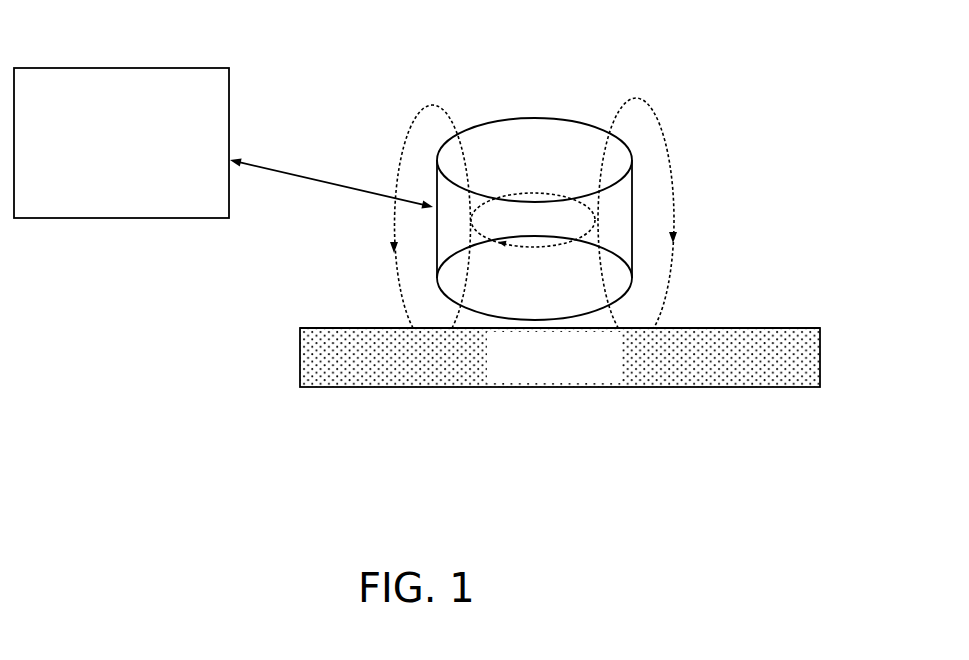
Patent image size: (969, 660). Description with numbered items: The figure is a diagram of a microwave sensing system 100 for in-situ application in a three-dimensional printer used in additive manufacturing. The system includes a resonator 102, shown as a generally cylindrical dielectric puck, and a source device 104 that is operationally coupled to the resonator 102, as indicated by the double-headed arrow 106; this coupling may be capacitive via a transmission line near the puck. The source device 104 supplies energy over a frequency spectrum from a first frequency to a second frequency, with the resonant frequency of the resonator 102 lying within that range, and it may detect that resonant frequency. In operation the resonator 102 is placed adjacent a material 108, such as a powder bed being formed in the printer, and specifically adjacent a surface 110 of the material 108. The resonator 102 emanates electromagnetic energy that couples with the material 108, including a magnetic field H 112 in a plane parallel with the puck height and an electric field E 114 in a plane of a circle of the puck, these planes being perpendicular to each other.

The microwave sensing system 100 is at (439, 556).
The resonator 102 is at (597, 132).
The source device 104 is at (107, 68).
The arrow 106 is at (303, 177).
The material 108 is at (758, 367).
The surface 110 is at (737, 328).
The magnetic field H 112 is at (665, 138).
The electric field E 114 is at (525, 247).